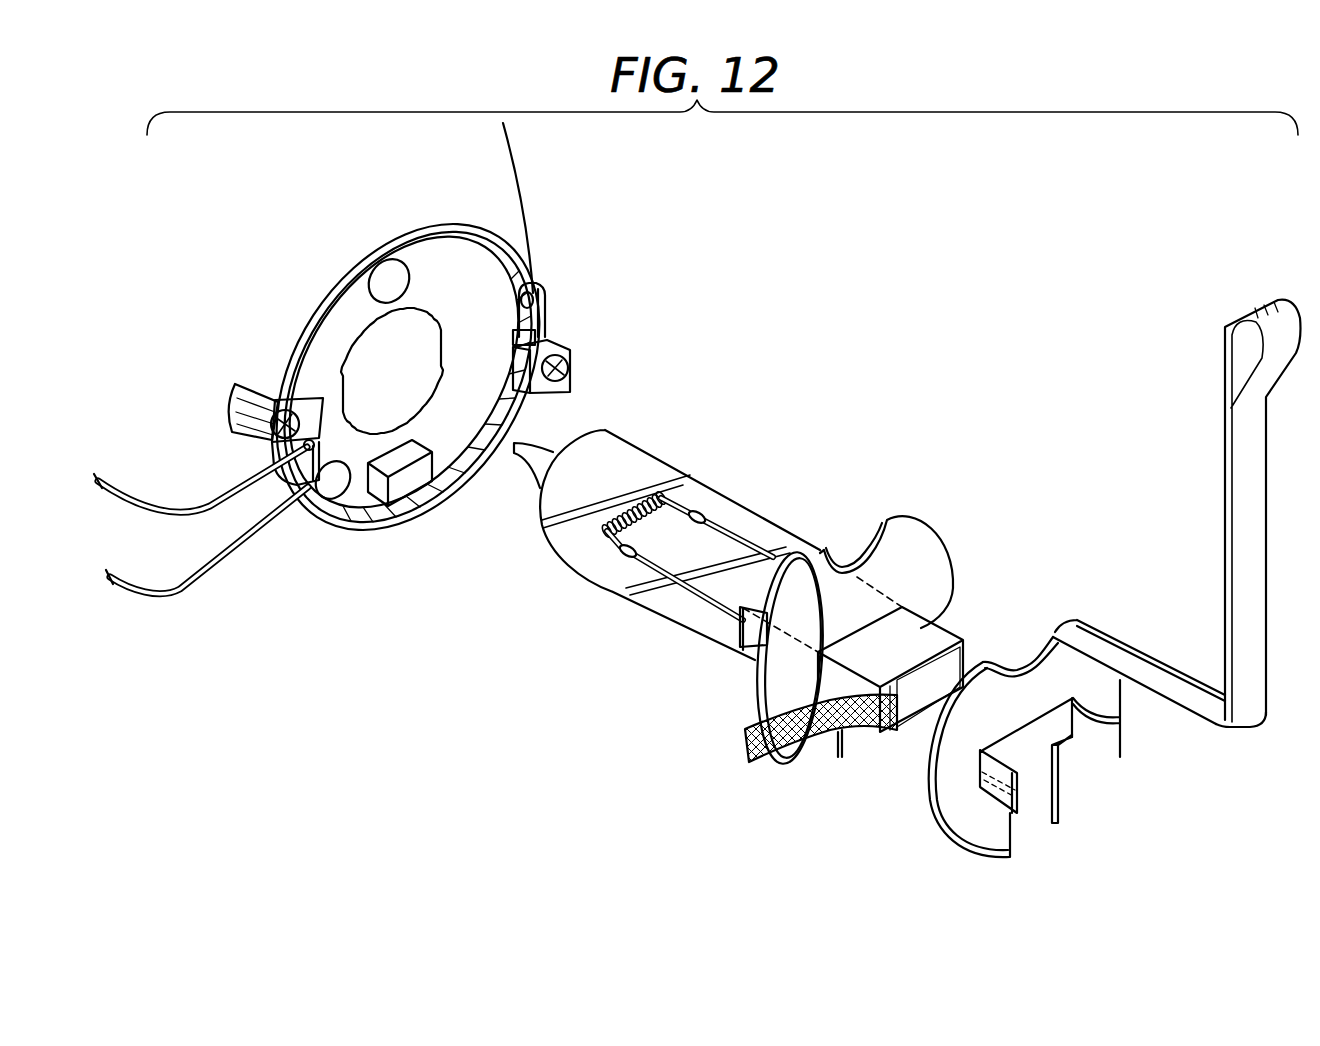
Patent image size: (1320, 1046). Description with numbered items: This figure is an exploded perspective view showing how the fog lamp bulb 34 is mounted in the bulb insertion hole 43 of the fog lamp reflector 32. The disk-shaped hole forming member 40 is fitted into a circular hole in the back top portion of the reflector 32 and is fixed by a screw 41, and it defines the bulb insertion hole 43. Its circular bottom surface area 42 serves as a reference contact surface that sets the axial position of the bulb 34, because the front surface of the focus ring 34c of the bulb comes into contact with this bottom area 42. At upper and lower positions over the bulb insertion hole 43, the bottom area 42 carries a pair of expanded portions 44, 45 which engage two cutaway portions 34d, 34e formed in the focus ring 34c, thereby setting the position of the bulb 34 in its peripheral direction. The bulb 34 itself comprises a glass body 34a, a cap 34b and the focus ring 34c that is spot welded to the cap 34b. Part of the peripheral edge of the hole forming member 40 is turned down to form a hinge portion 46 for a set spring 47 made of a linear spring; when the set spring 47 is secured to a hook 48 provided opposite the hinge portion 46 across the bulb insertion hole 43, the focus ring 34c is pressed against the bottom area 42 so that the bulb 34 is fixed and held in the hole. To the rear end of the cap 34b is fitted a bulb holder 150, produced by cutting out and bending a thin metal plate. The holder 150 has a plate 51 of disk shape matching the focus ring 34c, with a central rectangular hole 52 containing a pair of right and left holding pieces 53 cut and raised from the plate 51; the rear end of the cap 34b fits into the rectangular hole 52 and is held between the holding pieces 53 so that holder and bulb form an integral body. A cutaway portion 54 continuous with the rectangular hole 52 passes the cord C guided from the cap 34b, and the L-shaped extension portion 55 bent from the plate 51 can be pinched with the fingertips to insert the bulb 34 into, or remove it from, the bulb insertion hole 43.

The parabolic reflector 32 is at (507, 198).
The bulb insertion hole forming member 40 is at (443, 263).
The screw 41 is at (570, 377).
The circular bottom surface area 42 is at (351, 328).
The bulb insertion hole 43 is at (412, 378).
The expanded portion 44 is at (392, 278).
The expanded portion 45 is at (406, 480).
The hinge portion 46 is at (324, 464).
The set spring 47 is at (268, 578).
The hook 48 is at (537, 306).
The bulb 34 is at (651, 619).
The glass envelope 34a is at (712, 492).
The cap 34b is at (920, 628).
The focus ring 34c is at (912, 522).
The cutaway portion 34d is at (855, 560).
The cutaway portion 34e is at (843, 735).
The cord C is at (762, 756).
The bulb holder 150 is at (1115, 606).
The plate 51 is at (1115, 690).
The rectangular hole 52 is at (1028, 745).
The holding pieces 53 is at (1095, 735).
The cutaway portion 54 is at (1012, 840).
The strip 55 is at (1225, 490).